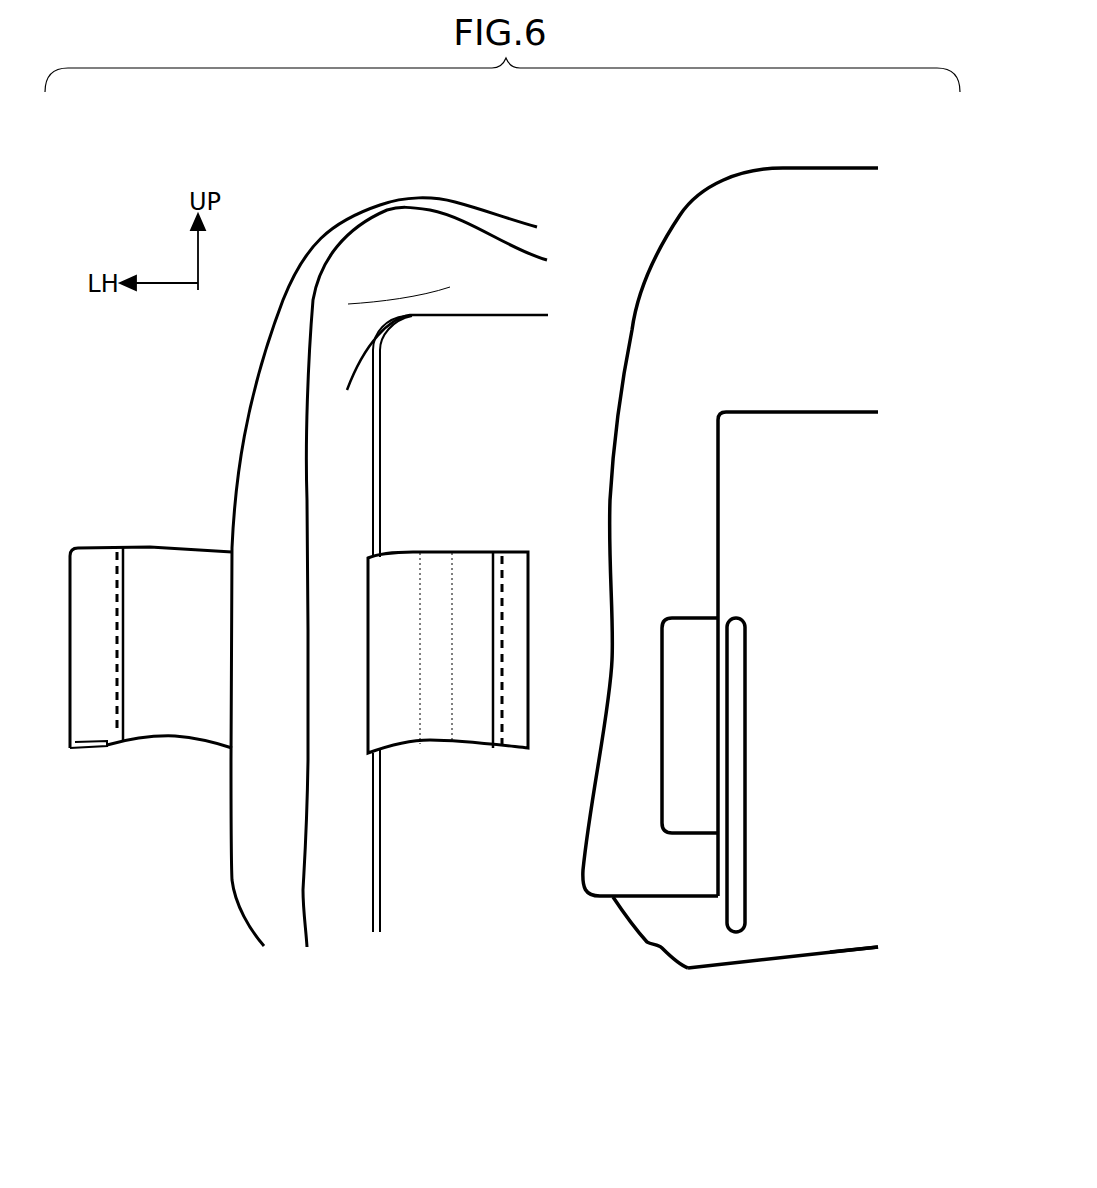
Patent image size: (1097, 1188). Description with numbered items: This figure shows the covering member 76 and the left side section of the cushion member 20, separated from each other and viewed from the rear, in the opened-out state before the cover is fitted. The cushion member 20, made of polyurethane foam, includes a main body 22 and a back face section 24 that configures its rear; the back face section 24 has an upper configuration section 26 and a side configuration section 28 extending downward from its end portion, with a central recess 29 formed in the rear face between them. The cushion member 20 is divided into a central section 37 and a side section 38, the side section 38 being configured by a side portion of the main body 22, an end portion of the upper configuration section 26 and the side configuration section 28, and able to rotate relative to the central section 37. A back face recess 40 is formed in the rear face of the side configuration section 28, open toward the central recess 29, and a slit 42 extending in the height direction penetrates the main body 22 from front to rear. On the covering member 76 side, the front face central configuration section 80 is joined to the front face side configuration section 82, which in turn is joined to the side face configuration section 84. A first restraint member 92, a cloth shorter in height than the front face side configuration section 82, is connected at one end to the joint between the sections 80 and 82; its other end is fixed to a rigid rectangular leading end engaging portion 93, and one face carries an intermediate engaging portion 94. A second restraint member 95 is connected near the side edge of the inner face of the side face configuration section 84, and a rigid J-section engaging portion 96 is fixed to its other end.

The cushion member 20 is at (708, 158).
The main body 22 is at (810, 940).
The back face section 24 is at (824, 206).
The upper configuration section 26 is at (853, 298).
The side configuration section 28 is at (628, 452).
The central recess 29 is at (834, 415).
The central section 37 is at (846, 940).
The side section 38 is at (656, 883).
The back face recess 40 is at (692, 625).
The slit 42 is at (740, 675).
The covering member 76 is at (310, 206).
The front face central configuration section 80 is at (479, 903).
The front face side configuration section 82 is at (352, 866).
The side face configuration section 84 is at (246, 882).
The first restraint member 92 is at (474, 562).
The leading end engaging portion 93 is at (520, 586).
The intermediate engaging portion 94 is at (438, 586).
The second restraint member 95 is at (183, 562).
The engaging portion 96 is at (95, 554).